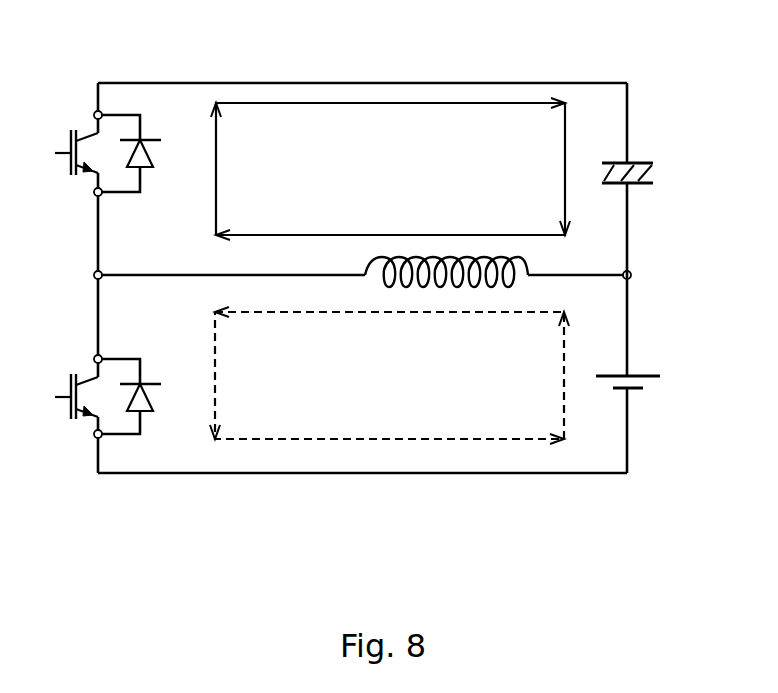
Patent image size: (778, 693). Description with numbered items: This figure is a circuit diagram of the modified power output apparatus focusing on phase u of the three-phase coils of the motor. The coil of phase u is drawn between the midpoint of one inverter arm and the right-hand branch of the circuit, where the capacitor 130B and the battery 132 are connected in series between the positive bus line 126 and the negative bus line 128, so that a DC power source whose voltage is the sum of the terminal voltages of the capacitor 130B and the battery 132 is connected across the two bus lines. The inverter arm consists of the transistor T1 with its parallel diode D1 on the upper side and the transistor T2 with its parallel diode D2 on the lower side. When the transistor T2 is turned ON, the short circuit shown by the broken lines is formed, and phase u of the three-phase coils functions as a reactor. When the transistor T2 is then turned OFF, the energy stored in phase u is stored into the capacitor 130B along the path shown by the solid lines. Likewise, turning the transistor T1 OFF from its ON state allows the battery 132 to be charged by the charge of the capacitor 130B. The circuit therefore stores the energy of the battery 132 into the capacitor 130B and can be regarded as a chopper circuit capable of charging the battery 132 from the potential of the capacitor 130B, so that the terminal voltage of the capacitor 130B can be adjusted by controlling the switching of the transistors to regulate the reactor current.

The positive bus line 126 is at (363, 83).
The negative bus line 128 is at (355, 473).
The capacitor 130B is at (648, 162).
The battery 132 is at (648, 373).
The transistor T1 is at (62, 175).
The transistor T2 is at (55, 418).
The diode D1 is at (152, 175).
The diode D2 is at (147, 373).
The phase u is at (362, 269).